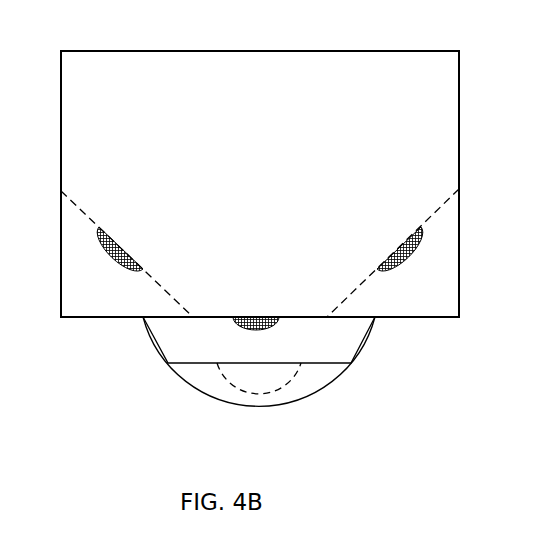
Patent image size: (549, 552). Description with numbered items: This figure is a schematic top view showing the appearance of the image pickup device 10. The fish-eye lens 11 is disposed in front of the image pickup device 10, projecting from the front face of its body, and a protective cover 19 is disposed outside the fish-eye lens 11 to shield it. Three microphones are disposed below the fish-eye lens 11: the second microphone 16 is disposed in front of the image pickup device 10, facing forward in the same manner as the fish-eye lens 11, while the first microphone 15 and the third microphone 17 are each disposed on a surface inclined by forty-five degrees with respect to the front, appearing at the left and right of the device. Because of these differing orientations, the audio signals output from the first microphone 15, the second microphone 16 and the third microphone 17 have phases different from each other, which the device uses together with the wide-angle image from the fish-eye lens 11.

The image pickup device 10 is at (397, 51).
The fish-eye lens 11 is at (237, 387).
The microphone #1 15 is at (105, 252).
The microphone #2 16 is at (282, 327).
The microphone #3 17 is at (408, 256).
The protective cover 19 is at (295, 402).